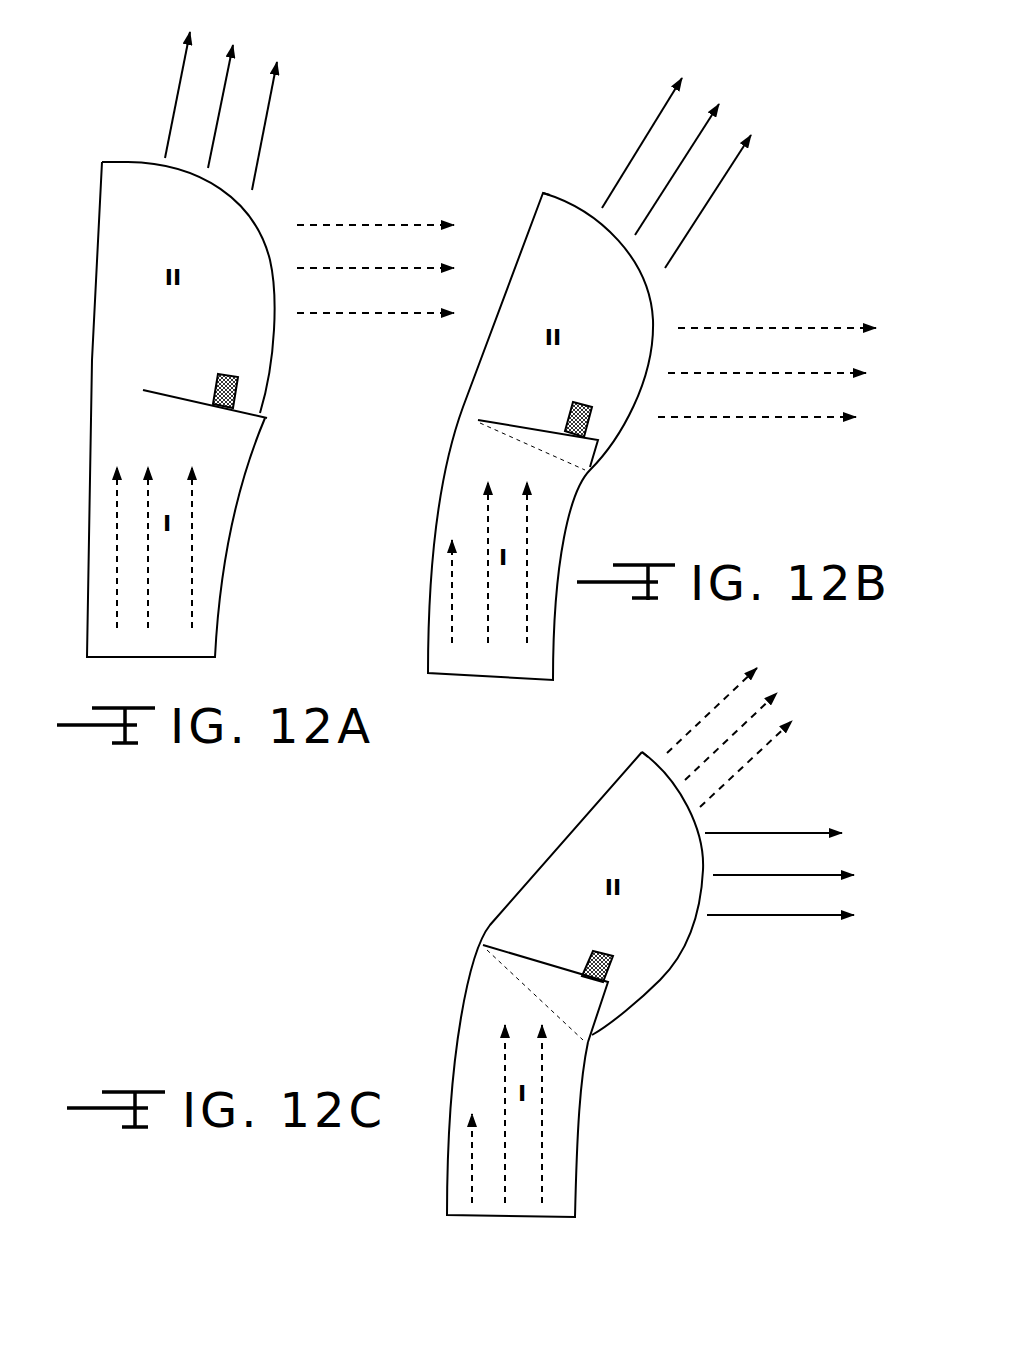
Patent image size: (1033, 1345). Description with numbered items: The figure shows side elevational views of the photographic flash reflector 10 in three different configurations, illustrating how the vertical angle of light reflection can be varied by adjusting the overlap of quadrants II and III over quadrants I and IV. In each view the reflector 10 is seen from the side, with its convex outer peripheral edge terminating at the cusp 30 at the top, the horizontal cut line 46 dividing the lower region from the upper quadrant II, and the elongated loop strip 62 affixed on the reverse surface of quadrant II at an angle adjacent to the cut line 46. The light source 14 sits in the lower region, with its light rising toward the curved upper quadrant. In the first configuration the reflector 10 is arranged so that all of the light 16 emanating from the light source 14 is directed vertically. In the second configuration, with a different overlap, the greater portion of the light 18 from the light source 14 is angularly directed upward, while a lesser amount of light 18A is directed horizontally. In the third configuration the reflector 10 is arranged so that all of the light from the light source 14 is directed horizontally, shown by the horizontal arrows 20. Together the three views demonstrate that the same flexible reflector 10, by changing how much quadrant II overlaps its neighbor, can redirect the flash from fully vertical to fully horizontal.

In FIG. 12A, the photographic flash reflector 10 is at (292, 302).
In FIG. 12B, the photographic flash reflector 10 is at (440, 448).
In FIG. 12C, the photographic flash reflector 10 is at (428, 1002).
In FIG. 12A, the light source 14 is at (112, 578).
In FIG. 12B, the light source 14 is at (446, 602).
In FIG. 12C, the light source 14 is at (468, 1173).
In FIG. 12A, the light 16 is at (279, 126).
In FIG. 12B, the light 18 is at (642, 139).
In FIG. 12B, the lesser amount of light 18A is at (772, 324).
In FIG. 12C, the flow arrows 20 is at (775, 831).
In FIG. 12A, the cusp 30 is at (102, 162).
In FIG. 12B, the cusp 30 is at (543, 193).
In FIG. 12C, the cusp 30 is at (642, 752).
In FIG. 12A, the horizontal cut line 46 is at (180, 398).
In FIG. 12B, the horizontal cut line 46 is at (520, 423).
In FIG. 12C, the horizontal cut line 46 is at (522, 953).
In FIG. 12A, the loop strip 62 is at (220, 378).
In FIG. 12B, the loop strip 62 is at (575, 403).
In FIG. 12C, the loop strip 62 is at (597, 950).